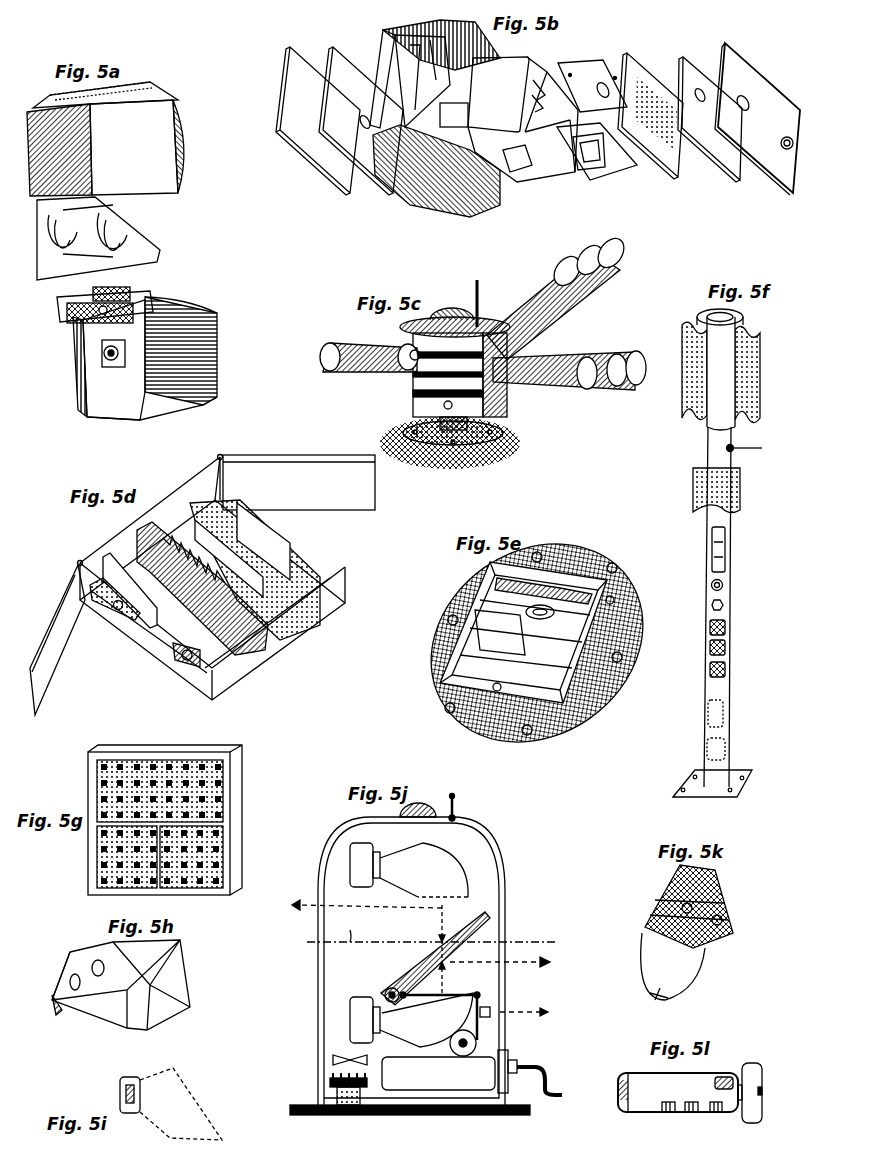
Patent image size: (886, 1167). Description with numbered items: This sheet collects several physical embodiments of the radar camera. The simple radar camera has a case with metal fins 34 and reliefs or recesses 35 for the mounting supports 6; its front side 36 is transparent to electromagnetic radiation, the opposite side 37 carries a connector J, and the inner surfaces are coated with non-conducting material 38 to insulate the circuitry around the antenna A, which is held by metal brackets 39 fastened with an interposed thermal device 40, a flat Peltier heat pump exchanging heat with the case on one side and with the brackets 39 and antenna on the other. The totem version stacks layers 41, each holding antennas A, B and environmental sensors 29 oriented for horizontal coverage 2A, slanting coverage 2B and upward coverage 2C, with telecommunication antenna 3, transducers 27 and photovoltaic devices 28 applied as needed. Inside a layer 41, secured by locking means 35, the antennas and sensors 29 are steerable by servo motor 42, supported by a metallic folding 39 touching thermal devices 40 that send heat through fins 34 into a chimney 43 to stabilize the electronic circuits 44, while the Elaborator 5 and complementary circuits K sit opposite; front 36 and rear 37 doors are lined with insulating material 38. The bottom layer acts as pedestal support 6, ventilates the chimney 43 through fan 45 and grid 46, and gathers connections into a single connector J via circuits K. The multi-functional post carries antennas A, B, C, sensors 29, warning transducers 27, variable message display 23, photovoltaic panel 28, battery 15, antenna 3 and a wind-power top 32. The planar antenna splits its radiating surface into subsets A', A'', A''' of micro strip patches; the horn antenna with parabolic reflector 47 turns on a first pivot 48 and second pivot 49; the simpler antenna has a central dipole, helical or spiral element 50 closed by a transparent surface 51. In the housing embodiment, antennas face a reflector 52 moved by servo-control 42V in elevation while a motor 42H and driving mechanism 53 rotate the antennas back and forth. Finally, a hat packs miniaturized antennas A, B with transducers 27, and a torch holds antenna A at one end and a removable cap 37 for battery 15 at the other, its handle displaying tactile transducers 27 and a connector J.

In FIG. 5C, the horizontal coverage 2A is at (587, 392).
In FIG. 5J, the horizontal coverage 2A is at (444, 950).
In FIG. 5C, the slanting coverage 2B is at (357, 377).
In FIG. 5J, the slanting coverage 2B is at (356, 919).
In FIG. 5C, the upward coverage 2C is at (557, 307).
In FIG. 5C, the antenna for radio connections 3 is at (480, 285).
In FIG. 5F, the antenna for radio connections 3 is at (758, 450).
In FIG. 5J, the antenna for radio connections 3 is at (457, 812).
In FIG. 5L, the antenna for radio connections 3 is at (733, 1077).
In FIG. 5D, the Elaborator 5 is at (300, 545).
In FIG. 5F, the Elaborator 5 is at (723, 712).
In FIG. 5J, the Elaborator 5 is at (438, 1073).
In FIG. 5A, the mounting supports 6 is at (130, 290).
In FIG. 5C, the mounting supports 6 is at (510, 443).
In FIG. 5E, the mounting supports 6 is at (497, 723).
In FIG. 5F, the mounting supports 6 is at (740, 790).
In FIG. 5F, the electric battery 15 is at (725, 748).
In FIG. 5F, the variable message display 23 is at (725, 560).
In FIG. 5B, the transducers 27 is at (787, 167).
In FIG. 5C, the transducers 27 is at (443, 312).
In FIG. 5F, the transducers 27 is at (723, 586).
In FIG. 5J, the transducers 27 is at (403, 812).
In FIG. 5K, the transducers 27 is at (717, 948).
In FIG. 5L, the transducers 27 is at (690, 1115).
In FIG. 5C, the photovoltaic panel 28 is at (493, 312).
In FIG. 5F, the photovoltaic panel 28 is at (740, 508).
In FIG. 5B, the environmental sensors 29 is at (637, 87).
In FIG. 5C, the environmental sensors 29 is at (513, 427).
In FIG. 5D, the environmental sensors 29 is at (115, 612).
In FIG. 5E, the environmental sensors 29 is at (503, 690).
In FIG. 5F, the environmental sensors 29 is at (723, 606).
In FIG. 5J, the environmental sensors 29 is at (537, 1012).
In FIG. 5L, the environmental sensors 29 is at (760, 1123).
In FIG. 5F, the top of the post 32 is at (755, 410).
In FIG. 5A, the metal fins 34 is at (200, 307).
In FIG. 5B, the metal fins 34 is at (427, 203).
In FIG. 5D, the metal fins 34 is at (267, 633).
In FIG. 5J, the metal fins 34 is at (330, 1080).
In FIG. 5A, the reliefs or recesses 35 is at (147, 93).
In FIG. 5B, the reliefs or recesses 35 is at (387, 72).
In FIG. 5D, the reliefs or recesses 35 is at (73, 560).
In FIG. 5E, the reliefs or recesses 35 is at (443, 680).
In FIG. 5A, the front side 36 is at (143, 178).
In FIG. 5B, the front side 36 is at (757, 160).
In FIG. 5D, the front side 36 is at (47, 680).
In FIG. 5B, the opposite side 37 is at (328, 170).
In FIG. 5D, the opposite side 37 is at (370, 507).
In FIG. 5L, the opposite side 37 is at (630, 1110).
In FIG. 5A, the non-conducting material 38 is at (100, 383).
In FIG. 5B, the non-conducting material 38 is at (373, 187).
In FIG. 5D, the non-conducting material 38 is at (340, 587).
In FIG. 5J, the non-conducting material 38 is at (505, 870).
In FIG. 5B, the metal brackets 39 is at (580, 62).
In FIG. 5D, the metal brackets 39 is at (297, 653).
In FIG. 5B, the thermal device 40 is at (600, 170).
In FIG. 5D, the thermal device 40 is at (130, 550).
In FIG. 5J, the thermal device 40 is at (337, 1094).
In FIG. 5C, the layers 41 is at (507, 337).
In FIG. 5D, the layers 41 is at (293, 450).
In FIG. 5D, the servo motor 42 is at (130, 627).
In FIG. 5J, the servo-control 42V is at (383, 992).
In FIG. 5J, the motor 42H is at (468, 1043).
In FIG. 5D, the chimney 43 is at (330, 610).
In FIG. 5E, the chimney 43 is at (607, 677).
In FIG. 5D, the electronic circuits 44 is at (203, 647).
In FIG. 5J, the electronic circuits 44 is at (365, 943).
In FIG. 5E, the fan 45 is at (607, 647).
In FIG. 5J, the fan 45 is at (333, 1060).
In FIG. 5E, the grid 46 is at (570, 562).
In FIG. 5H, the parabolic reflector 47 is at (170, 1000).
In FIG. 5H, the first pivot 48 is at (97, 963).
In FIG. 5H, the second pivot 49 is at (70, 978).
In FIG. 5I, the central element 50 is at (120, 1090).
In FIG. 5I, the surface transparent to microwaves 51 is at (127, 1083).
In FIG. 5J, the reflector 52 is at (385, 970).
In FIG. 5J, the driving mechanism 53 is at (480, 992).
In FIG. 5B, the antenna A is at (665, 87).
In FIG. 5D, the antenna A is at (172, 684).
In FIG. 5F, the antenna A is at (745, 682).
In FIG. 5G, the antenna A is at (151, 820).
In FIG. 5J, the antenna A is at (426, 1020).
In FIG. 5K, the antenna A is at (735, 904).
In FIG. 5L, the antenna A is at (732, 1132).
In FIG. 5G, the subset of micro strip patches A' is at (184, 791).
In FIG. 5G, the subset of micro strip patches A'' is at (104, 858).
In FIG. 5G, the subset of micro strip patches A''' is at (216, 857).
In FIG. 5D, the antenna B is at (140, 653).
In FIG. 5F, the antenna B is at (726, 648).
In FIG. 5J, the antenna B is at (424, 870).
In FIG. 5K, the antenna B is at (692, 908).
In FIG. 5F, the antenna C is at (726, 628).
In FIG. 5A, the connector J is at (100, 357).
In FIG. 5B, the connector J is at (313, 120).
In FIG. 5C, the connector J is at (527, 403).
In FIG. 5E, the connector J is at (643, 630).
In FIG. 5F, the connector J is at (730, 768).
In FIG. 5J, the connector J is at (520, 1065).
In FIG. 5L, the connector J is at (617, 1103).
In FIG. 5E, the complementary circuits K is at (563, 720).
In FIG. 5L, the complementary circuits K is at (770, 1040).